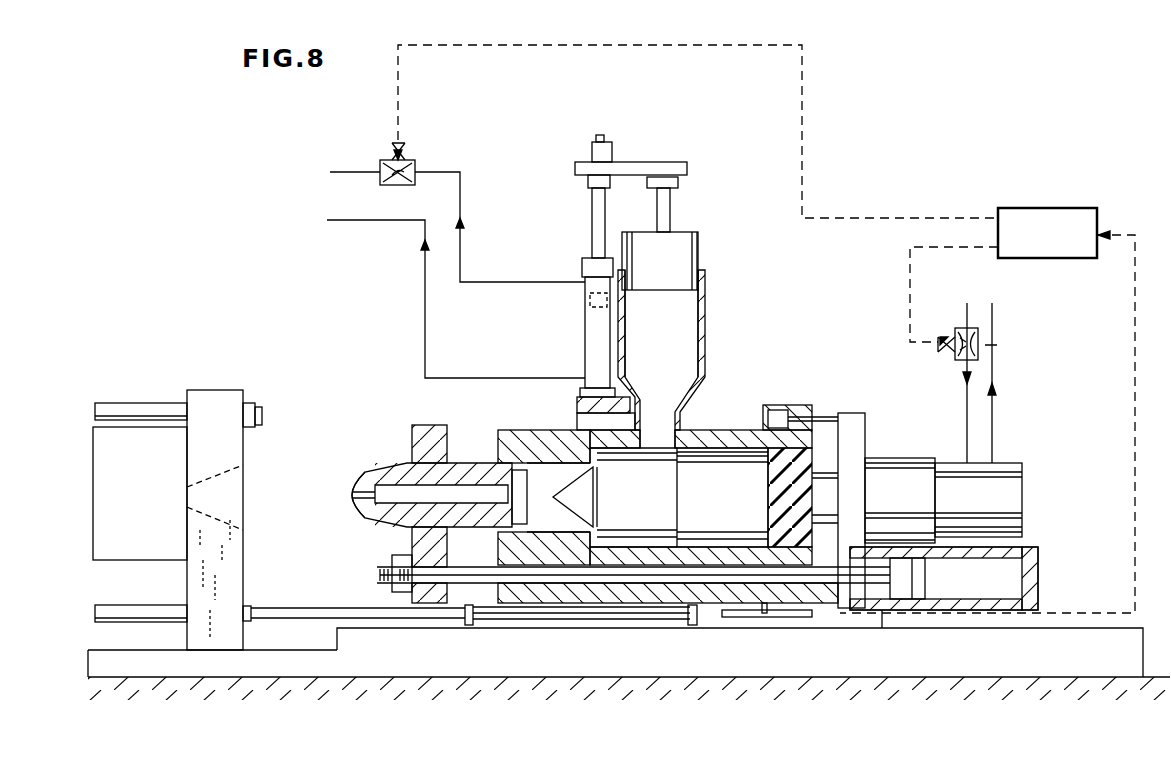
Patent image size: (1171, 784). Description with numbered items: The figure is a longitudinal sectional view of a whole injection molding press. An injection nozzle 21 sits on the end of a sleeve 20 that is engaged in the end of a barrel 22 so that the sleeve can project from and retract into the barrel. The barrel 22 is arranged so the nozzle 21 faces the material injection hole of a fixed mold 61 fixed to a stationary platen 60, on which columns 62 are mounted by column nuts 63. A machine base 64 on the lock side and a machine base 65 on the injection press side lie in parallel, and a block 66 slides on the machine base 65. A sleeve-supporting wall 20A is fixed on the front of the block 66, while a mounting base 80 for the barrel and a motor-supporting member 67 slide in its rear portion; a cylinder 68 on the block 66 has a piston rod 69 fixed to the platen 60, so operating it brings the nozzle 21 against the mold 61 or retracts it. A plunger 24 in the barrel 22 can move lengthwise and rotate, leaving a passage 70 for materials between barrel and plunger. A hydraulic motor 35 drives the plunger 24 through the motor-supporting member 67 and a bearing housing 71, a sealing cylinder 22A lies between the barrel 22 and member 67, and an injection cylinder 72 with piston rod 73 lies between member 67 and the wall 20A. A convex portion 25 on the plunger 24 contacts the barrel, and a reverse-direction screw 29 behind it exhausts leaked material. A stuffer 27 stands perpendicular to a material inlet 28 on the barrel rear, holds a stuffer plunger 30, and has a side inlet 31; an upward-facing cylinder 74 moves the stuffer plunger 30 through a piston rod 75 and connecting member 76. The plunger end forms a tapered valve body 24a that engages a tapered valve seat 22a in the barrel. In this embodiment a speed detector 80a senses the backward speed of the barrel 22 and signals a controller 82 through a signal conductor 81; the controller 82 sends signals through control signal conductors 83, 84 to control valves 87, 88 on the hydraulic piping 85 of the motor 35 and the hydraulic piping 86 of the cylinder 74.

The sleeve 20 is at (380, 470).
The sleeve-supporting wall 20A is at (422, 424).
The injection nozzle 21 is at (353, 488).
The barrel 22 is at (510, 428).
The valve seat 22a is at (586, 438).
The sealing cylinder 22A is at (806, 404).
The plunger 24 is at (730, 445).
The valve body 24a is at (595, 508).
The convex portion 25 is at (712, 447).
The stuffer 27 is at (708, 355).
The material inlet 28 is at (648, 428).
The screw 29 is at (766, 507).
The stuffer plunger 30 is at (700, 246).
The inlet 31 is at (707, 293).
The hydraulic motor 35 is at (1024, 495).
The stationary platen 60 is at (215, 388).
The fixed mold 61 is at (116, 560).
The columns 62 is at (141, 403).
The column nuts 63 is at (260, 404).
The machine base 64 is at (300, 650).
The machine base 65 is at (1144, 630).
The block 66 is at (747, 629).
The motor-supporting member 67 is at (866, 420).
The cylinder 68 is at (615, 619).
The piston rod 69 is at (326, 608).
The passage 70 is at (615, 452).
The bearing housing 71 is at (905, 456).
The injection cylinder 72 is at (1039, 553).
The piston rod 73 is at (718, 584).
The cylinder 74 is at (583, 325).
The piston rod 75 is at (590, 222).
The connecting member 76 is at (668, 160).
The mounting base 80 is at (548, 600).
The speed detector 80a is at (792, 618).
The signal conductor 81 is at (1138, 442).
The controller 82 is at (1040, 206).
The control signal conductor 83 is at (908, 272).
The control signal conductor 84 is at (805, 131).
The hydraulic piping 85 is at (965, 310).
The hydraulic piping 86 is at (460, 170).
The control valve 87 is at (937, 352).
The control valve 88 is at (378, 178).